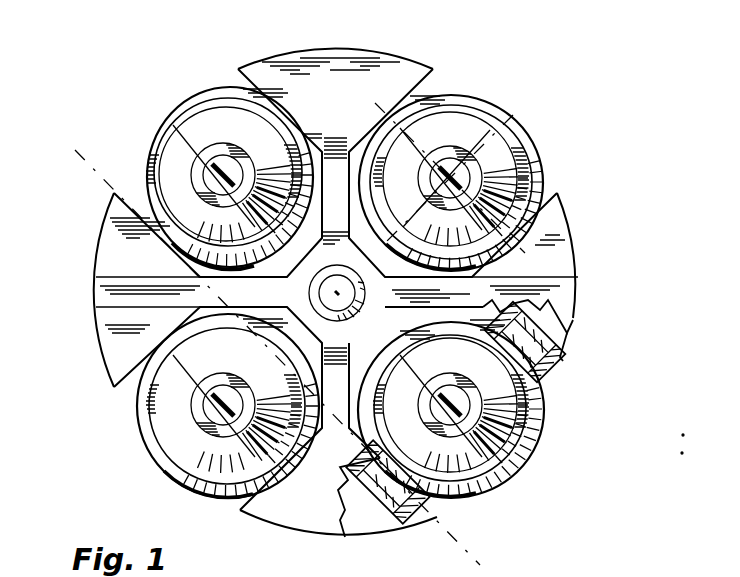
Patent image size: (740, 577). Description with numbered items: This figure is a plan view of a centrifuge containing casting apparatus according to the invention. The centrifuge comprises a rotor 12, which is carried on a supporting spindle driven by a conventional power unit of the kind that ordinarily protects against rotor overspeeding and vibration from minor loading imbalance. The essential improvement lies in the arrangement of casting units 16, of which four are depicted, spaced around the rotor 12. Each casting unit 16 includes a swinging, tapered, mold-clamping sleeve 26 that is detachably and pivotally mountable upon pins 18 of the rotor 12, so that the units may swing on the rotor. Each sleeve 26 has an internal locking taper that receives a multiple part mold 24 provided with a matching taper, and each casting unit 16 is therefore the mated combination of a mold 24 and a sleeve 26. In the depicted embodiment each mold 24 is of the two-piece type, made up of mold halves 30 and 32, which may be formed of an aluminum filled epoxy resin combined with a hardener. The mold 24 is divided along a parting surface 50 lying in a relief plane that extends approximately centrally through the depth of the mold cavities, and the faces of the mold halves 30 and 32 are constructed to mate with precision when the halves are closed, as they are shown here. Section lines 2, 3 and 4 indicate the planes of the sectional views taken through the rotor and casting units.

The rotor 12 is at (582, 280).
The casting unit 16 is at (232, 88).
The pin 18 is at (570, 338).
The multiple part mold 24 is at (180, 140).
The mold-clamping sleeve 26 is at (148, 137).
The mold half 30 is at (210, 116).
The mold half 32 is at (162, 167).
The parting surface 50 is at (336, 308).
The section line 2- 2 is at (57, 157).
The section line 3- 3 is at (360, 108).
The section line 4- 4 is at (527, 117).